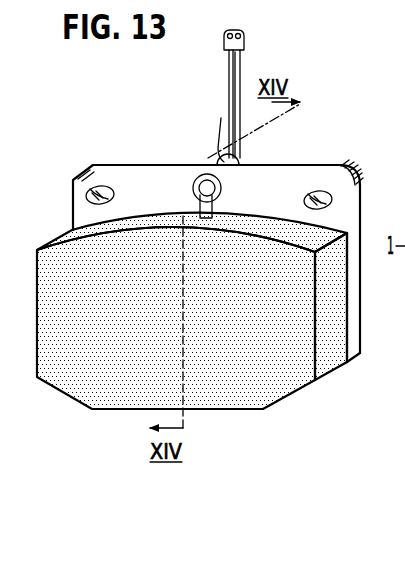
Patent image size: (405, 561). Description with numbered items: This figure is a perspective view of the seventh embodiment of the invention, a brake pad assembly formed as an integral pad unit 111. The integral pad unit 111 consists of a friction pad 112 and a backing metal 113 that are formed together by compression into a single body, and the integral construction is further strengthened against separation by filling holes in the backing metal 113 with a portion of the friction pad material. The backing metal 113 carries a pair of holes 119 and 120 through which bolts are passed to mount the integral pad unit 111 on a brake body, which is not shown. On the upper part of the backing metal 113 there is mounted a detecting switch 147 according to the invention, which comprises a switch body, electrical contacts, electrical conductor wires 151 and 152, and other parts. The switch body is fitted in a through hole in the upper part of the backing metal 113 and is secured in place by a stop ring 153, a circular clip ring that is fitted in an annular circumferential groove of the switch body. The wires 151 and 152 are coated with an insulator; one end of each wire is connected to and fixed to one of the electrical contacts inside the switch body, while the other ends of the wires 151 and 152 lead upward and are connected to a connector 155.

The integral pad unit 111 is at (356, 362).
The friction pad 112 is at (305, 380).
The backing metal 113 is at (356, 291).
The hole 119 is at (88, 191).
The hole 120 is at (332, 205).
The detecting switch 147 is at (228, 189).
The electrical conductor wire 151 is at (228, 63).
The electrical conductor wire 152 is at (241, 58).
The stop ring 153 is at (221, 132).
The connector 155 is at (244, 44).